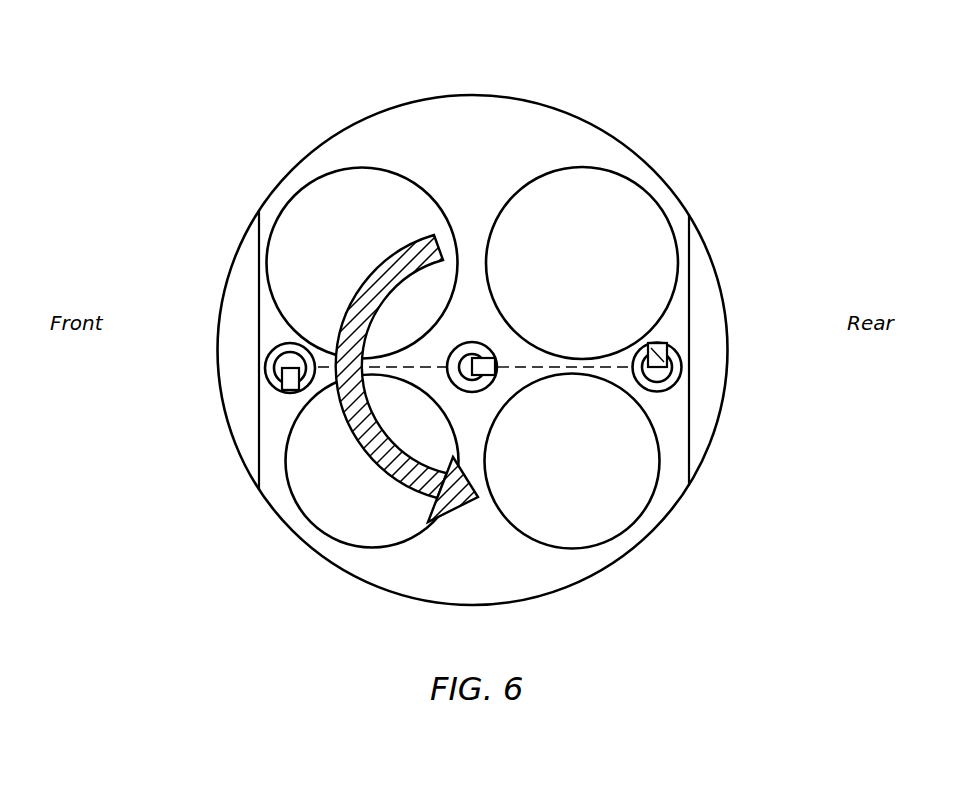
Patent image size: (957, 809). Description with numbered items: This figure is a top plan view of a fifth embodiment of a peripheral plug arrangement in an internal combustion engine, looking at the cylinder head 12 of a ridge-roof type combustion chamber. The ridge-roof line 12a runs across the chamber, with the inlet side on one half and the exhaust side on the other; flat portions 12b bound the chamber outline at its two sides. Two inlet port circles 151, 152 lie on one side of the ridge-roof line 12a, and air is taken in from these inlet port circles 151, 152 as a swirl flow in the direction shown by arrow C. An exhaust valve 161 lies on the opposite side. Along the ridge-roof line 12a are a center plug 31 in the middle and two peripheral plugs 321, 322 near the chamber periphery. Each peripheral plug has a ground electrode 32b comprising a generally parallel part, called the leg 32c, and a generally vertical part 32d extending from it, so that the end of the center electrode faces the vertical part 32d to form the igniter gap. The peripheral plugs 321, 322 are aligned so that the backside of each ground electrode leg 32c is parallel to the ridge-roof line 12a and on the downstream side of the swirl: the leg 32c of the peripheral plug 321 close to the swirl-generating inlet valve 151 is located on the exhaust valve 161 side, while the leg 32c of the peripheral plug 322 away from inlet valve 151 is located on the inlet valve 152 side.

The cylinder head 12 is at (353, 150).
The ridge-roof line 12a is at (517, 362).
The flat side portion 12b is at (240, 285).
The inlet port circle 151 is at (395, 192).
The inlet port circle 152 is at (563, 193).
The exhaust valve 161 is at (373, 528).
The center plug 31 is at (471, 344).
The peripheral plug 321 is at (273, 341).
The peripheral plug 322 is at (673, 392).
The ground electrode 32b is at (133, 375).
The generally parallel part (leg of the ground electrode) 32c is at (288, 393).
The generally vertical part 32d is at (283, 378).
The arrow (swirl flow direction) C is at (375, 275).